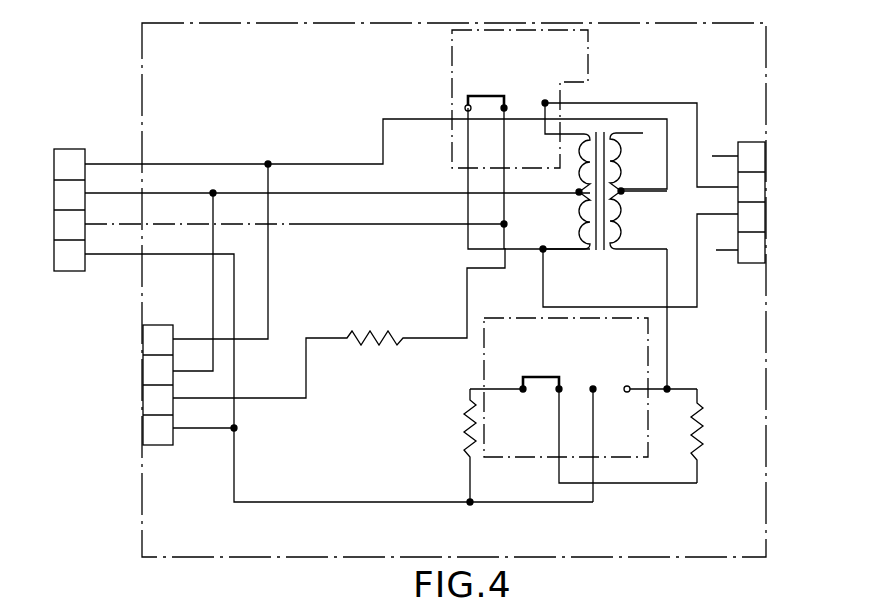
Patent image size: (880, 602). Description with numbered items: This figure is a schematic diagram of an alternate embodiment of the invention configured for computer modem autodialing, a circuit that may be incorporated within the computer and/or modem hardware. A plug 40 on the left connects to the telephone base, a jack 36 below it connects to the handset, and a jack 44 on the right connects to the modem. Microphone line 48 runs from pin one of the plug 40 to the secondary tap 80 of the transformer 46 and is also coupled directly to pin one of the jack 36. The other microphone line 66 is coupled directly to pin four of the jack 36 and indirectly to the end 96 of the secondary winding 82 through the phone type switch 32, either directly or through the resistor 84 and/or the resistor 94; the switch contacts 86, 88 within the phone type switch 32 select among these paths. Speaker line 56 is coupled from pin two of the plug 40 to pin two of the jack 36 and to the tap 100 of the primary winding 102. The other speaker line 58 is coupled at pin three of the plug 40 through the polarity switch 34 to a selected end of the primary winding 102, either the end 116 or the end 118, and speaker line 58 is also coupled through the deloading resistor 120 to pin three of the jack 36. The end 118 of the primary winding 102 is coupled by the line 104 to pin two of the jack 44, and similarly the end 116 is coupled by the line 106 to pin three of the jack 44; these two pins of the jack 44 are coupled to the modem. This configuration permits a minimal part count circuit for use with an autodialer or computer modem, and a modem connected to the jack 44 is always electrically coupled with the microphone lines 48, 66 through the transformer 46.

The plug 40 is at (68, 148).
The jack 44 is at (742, 142).
The jack 36 is at (157, 447).
The microphone line 48 is at (148, 164).
The speaker line 56 is at (160, 193).
The speaker line 58 is at (157, 224).
The microphone line 66 is at (158, 254).
The deloading resistor 120 is at (360, 331).
The polarity switch 34 is at (588, 45).
The phone type switch 32 is at (484, 370).
The resistor 84 is at (466, 425).
The switch contact 86 is at (524, 393).
The switch contact 88 is at (594, 386).
The resistor 94 is at (702, 420).
The line 106 is at (682, 308).
The line 104 is at (672, 102).
The end of primary winding 118 is at (571, 133).
The transformer 46 is at (600, 252).
The tap of primary winding 100 is at (578, 193).
The primary winding 102 is at (576, 224).
The end of primary winding 116 is at (575, 252).
The secondary winding 82 is at (626, 158).
The secondary tap 80 is at (624, 191).
The end of secondary winding 96 is at (620, 252).